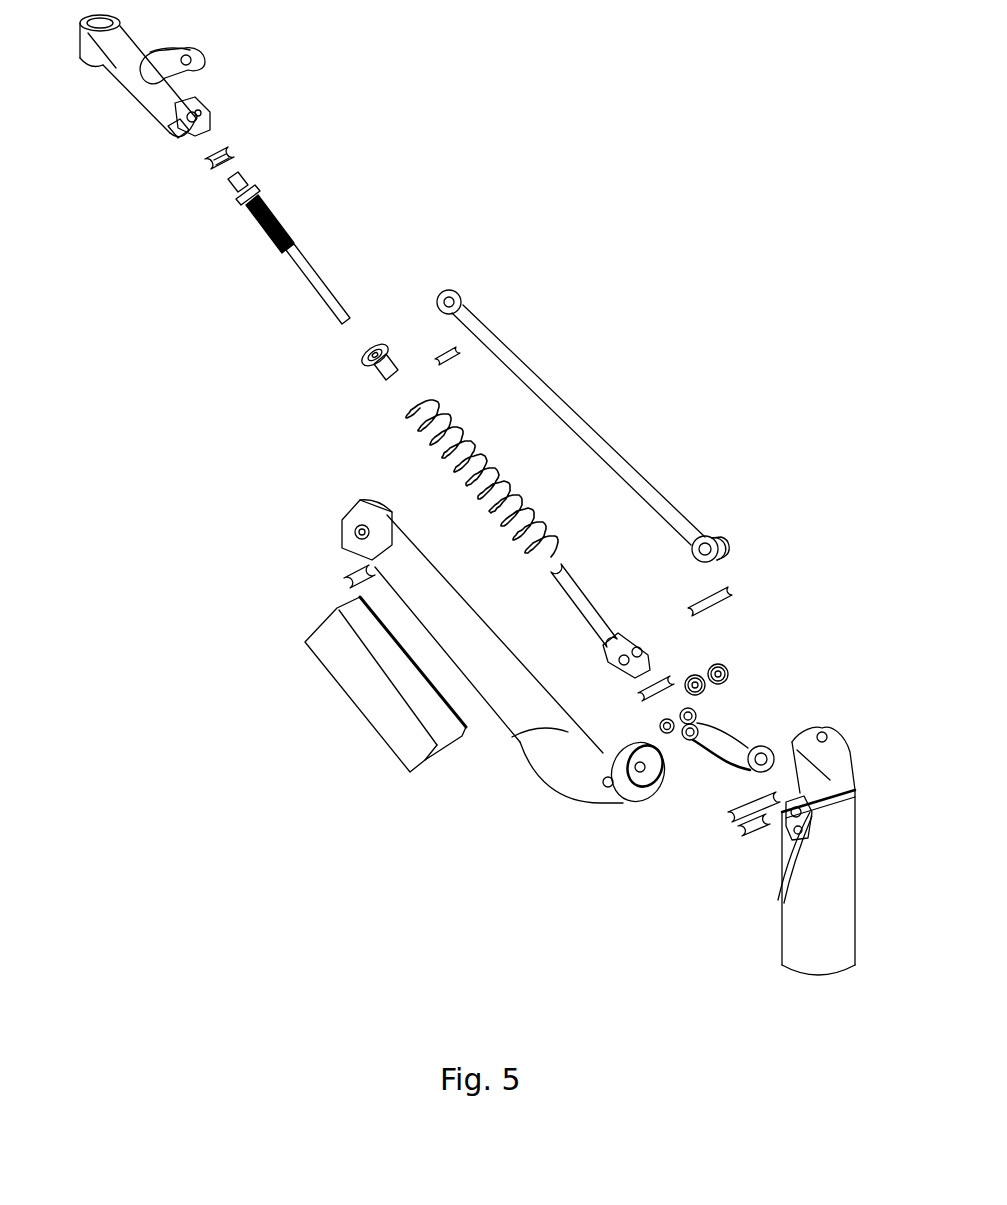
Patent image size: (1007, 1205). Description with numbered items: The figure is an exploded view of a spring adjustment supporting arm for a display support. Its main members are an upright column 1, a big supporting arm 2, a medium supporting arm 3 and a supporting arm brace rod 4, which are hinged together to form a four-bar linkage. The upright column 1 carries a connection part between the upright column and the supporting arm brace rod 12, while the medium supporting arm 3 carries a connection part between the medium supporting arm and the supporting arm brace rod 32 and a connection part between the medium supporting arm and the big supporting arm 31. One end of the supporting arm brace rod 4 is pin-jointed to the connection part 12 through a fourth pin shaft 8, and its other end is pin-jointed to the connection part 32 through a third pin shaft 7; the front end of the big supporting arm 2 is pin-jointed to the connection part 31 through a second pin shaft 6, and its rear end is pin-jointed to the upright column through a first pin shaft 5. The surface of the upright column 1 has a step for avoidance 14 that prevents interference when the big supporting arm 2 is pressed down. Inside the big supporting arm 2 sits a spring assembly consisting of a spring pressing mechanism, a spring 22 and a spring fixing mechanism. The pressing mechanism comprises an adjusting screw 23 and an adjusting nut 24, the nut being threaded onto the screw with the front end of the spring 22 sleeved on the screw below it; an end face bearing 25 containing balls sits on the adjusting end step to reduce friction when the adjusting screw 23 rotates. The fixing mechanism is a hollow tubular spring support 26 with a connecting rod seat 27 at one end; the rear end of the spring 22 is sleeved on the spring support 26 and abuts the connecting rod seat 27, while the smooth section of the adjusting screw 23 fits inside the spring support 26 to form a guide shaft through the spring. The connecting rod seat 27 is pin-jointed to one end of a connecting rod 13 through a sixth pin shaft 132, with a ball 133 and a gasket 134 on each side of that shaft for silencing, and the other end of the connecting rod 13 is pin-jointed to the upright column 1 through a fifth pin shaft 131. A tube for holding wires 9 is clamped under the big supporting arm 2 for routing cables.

The upright column 1 is at (827, 877).
The connection part between upright column and supporting arm brace rod 12 is at (828, 747).
The connecting rod 13 is at (712, 758).
The fifth pin shaft 131 is at (743, 840).
The sixth pin shaft 132 is at (650, 698).
The balls 133 is at (728, 672).
The gaskets 134 is at (696, 713).
The step for avoidance 14 is at (810, 853).
The big supporting arm 2 is at (510, 738).
The spring 22 is at (437, 440).
The adjusting screw 23 is at (280, 253).
The adjusting nut 24 is at (362, 375).
The end face bearing 25 is at (208, 172).
The spring support 26 is at (607, 617).
The connecting rod seat 27 is at (653, 663).
The medium supporting arm 3 is at (118, 68).
The connection part between medium supporting arm and big supporting arm 31 is at (210, 123).
The connection part between medium supporting arm and supporting arm brace rod 32 is at (207, 57).
The supporting arm brace rod 4 is at (563, 395).
The first pin shaft 5 is at (730, 817).
The second pin shaft 6 is at (347, 582).
The third pin shaft 7 is at (442, 350).
The fourth pin shaft 8 is at (730, 595).
The tube for holding wires 9 is at (357, 710).